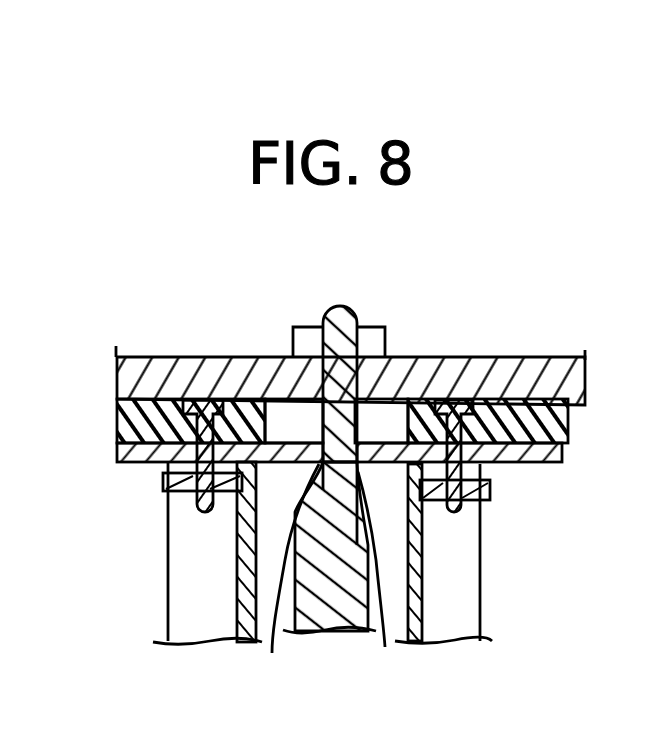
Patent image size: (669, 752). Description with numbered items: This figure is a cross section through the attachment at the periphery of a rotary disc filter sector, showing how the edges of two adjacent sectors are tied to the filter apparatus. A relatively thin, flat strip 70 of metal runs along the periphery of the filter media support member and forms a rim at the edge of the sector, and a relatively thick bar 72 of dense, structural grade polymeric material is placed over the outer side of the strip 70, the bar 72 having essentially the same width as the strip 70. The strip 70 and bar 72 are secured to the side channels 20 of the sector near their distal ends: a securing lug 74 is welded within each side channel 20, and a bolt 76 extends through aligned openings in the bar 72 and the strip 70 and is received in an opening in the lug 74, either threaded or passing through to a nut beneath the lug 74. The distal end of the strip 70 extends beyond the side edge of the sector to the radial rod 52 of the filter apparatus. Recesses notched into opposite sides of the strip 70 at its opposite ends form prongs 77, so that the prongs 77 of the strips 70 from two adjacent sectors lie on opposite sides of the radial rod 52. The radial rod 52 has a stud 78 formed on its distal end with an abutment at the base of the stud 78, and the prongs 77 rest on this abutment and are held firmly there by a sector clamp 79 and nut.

The side channel 20 is at (240, 588).
The radial rod 52 is at (323, 603).
The flat strip 70 is at (148, 457).
The bar 72 is at (148, 375).
The securing lug 74 is at (165, 481).
The bolt 76 is at (213, 397).
The prong 77 is at (272, 653).
The stud 78 is at (338, 323).
The sector clamp 79 is at (190, 372).